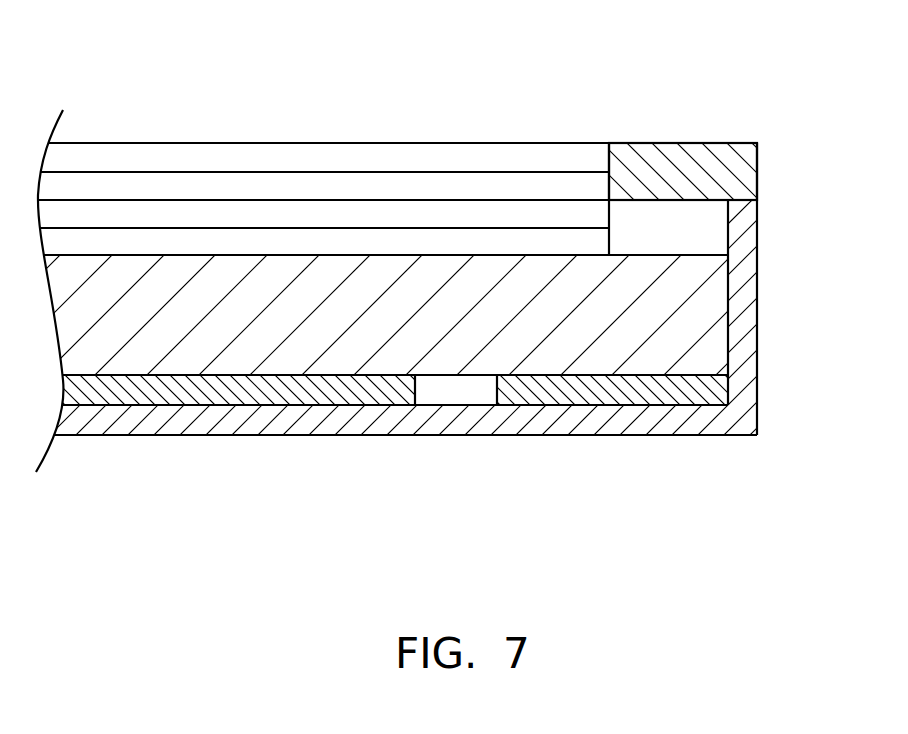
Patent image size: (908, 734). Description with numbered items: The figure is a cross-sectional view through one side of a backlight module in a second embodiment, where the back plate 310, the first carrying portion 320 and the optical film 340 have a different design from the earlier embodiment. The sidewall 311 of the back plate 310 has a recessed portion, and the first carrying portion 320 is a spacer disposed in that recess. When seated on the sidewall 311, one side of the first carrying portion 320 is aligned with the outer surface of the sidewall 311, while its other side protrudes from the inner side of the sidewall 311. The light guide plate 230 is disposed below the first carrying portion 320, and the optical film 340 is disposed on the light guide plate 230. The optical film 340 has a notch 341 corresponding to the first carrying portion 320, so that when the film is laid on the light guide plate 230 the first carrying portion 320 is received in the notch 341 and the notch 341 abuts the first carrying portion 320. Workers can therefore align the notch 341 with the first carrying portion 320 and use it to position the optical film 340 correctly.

The light guide plate 230 is at (255, 340).
The back plate 310 is at (776, 144).
The sidewall 311 is at (747, 303).
The first carrying portion 320 is at (689, 152).
The optical film 340 is at (228, 152).
The notch 341 is at (614, 150).